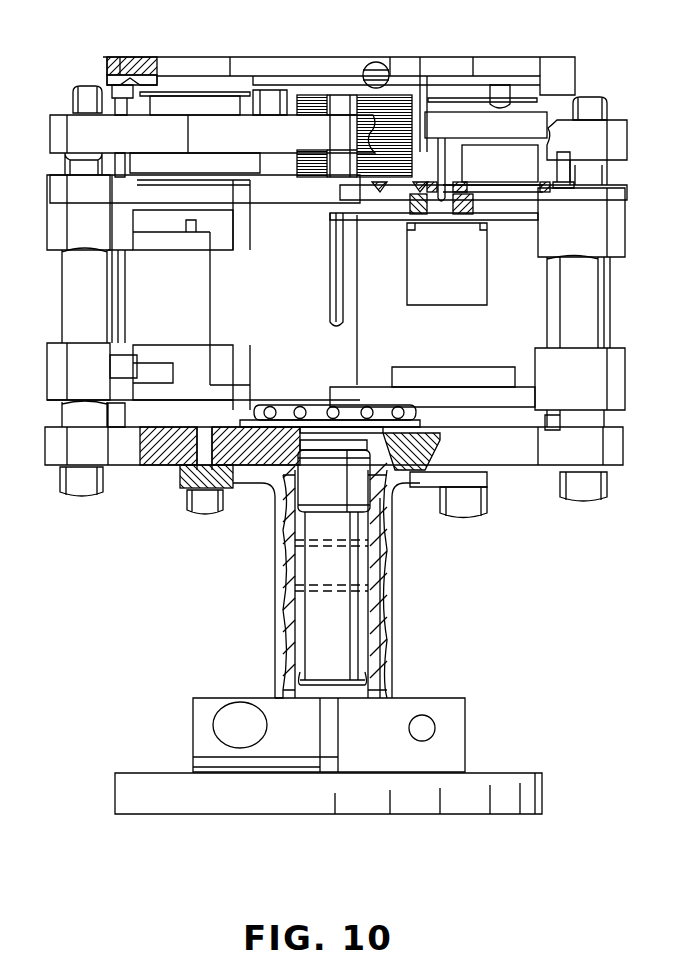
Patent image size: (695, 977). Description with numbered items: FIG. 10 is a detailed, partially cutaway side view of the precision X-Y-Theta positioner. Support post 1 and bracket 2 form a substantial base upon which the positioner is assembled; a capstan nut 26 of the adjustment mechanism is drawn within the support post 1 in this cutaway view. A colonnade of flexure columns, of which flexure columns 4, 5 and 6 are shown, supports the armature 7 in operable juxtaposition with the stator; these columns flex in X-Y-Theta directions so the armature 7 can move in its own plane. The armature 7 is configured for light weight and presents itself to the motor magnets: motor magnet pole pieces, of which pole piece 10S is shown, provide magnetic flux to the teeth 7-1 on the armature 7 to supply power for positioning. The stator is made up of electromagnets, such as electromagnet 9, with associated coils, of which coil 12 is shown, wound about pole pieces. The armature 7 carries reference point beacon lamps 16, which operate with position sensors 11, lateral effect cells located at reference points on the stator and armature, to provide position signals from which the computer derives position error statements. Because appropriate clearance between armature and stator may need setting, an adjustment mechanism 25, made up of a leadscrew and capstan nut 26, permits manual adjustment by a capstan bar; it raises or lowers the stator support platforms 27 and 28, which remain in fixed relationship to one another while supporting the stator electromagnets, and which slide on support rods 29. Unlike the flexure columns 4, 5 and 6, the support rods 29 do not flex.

The support post 1 is at (273, 610).
The bracket 2 is at (193, 715).
The flexure column 4 is at (553, 275).
The flexure column 5 is at (338, 275).
The flexure column 6 is at (118, 266).
The armature 7 is at (553, 60).
The teeth 7-1 is at (305, 57).
The electromagnet 9 is at (508, 348).
The motor magnet pole piece 10S is at (400, 92).
The position sensor 11 is at (570, 112).
The coil 12 is at (356, 95).
The beacon lamp 16 is at (480, 105).
The adjustment mechanism 25 is at (400, 490).
The nut 26 is at (355, 568).
The stator support platform 27 is at (627, 378).
The stator support platform 28 is at (627, 220).
The support rod 29 is at (612, 320).